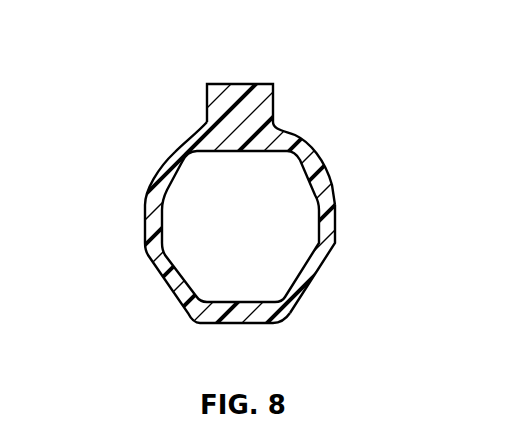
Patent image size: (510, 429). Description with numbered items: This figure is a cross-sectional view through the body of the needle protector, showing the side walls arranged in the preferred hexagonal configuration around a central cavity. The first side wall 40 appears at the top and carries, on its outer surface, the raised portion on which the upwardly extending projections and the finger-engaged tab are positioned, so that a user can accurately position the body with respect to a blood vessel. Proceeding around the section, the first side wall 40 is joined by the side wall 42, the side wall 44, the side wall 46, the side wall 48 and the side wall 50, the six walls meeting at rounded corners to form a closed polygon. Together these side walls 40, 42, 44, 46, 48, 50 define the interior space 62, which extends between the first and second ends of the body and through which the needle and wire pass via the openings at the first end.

The first side wall 40 is at (202, 132).
The side wall 42 is at (162, 157).
The side wall 44 is at (167, 285).
The side wall 46 is at (240, 325).
The side wall 48 is at (325, 265).
The side wall 50 is at (323, 167).
The interior space 62 is at (177, 202).